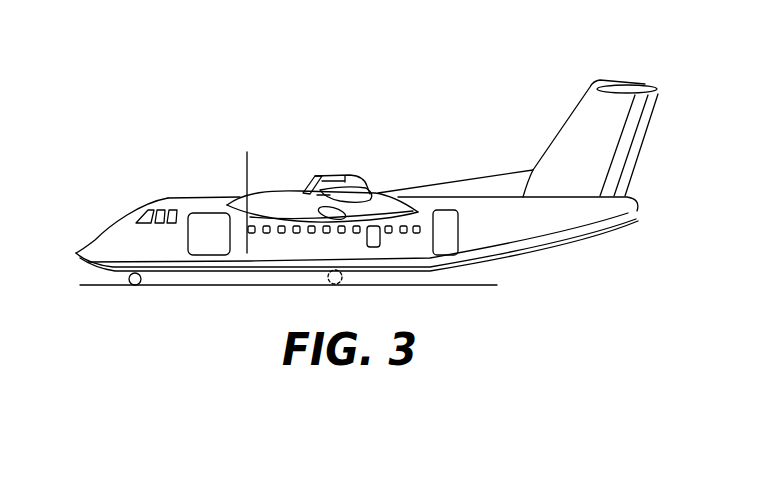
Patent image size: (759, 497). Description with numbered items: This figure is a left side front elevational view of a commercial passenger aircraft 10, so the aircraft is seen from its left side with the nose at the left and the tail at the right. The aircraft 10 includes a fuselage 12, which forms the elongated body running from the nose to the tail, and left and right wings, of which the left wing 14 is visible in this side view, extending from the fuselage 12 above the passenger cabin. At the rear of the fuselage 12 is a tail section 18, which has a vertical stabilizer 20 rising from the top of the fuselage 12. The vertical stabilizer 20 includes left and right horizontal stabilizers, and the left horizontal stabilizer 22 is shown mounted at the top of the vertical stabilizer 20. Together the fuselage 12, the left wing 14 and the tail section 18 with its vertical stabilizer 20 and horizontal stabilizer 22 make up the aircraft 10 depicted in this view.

The commercial passenger aircraft 10 is at (388, 113).
The fuselage 12 is at (158, 253).
The left wing 14 is at (328, 173).
The tail section 18 is at (666, 143).
The vertical stabilizer 20 is at (573, 132).
The left horizontal stabilizer 22 is at (642, 86).